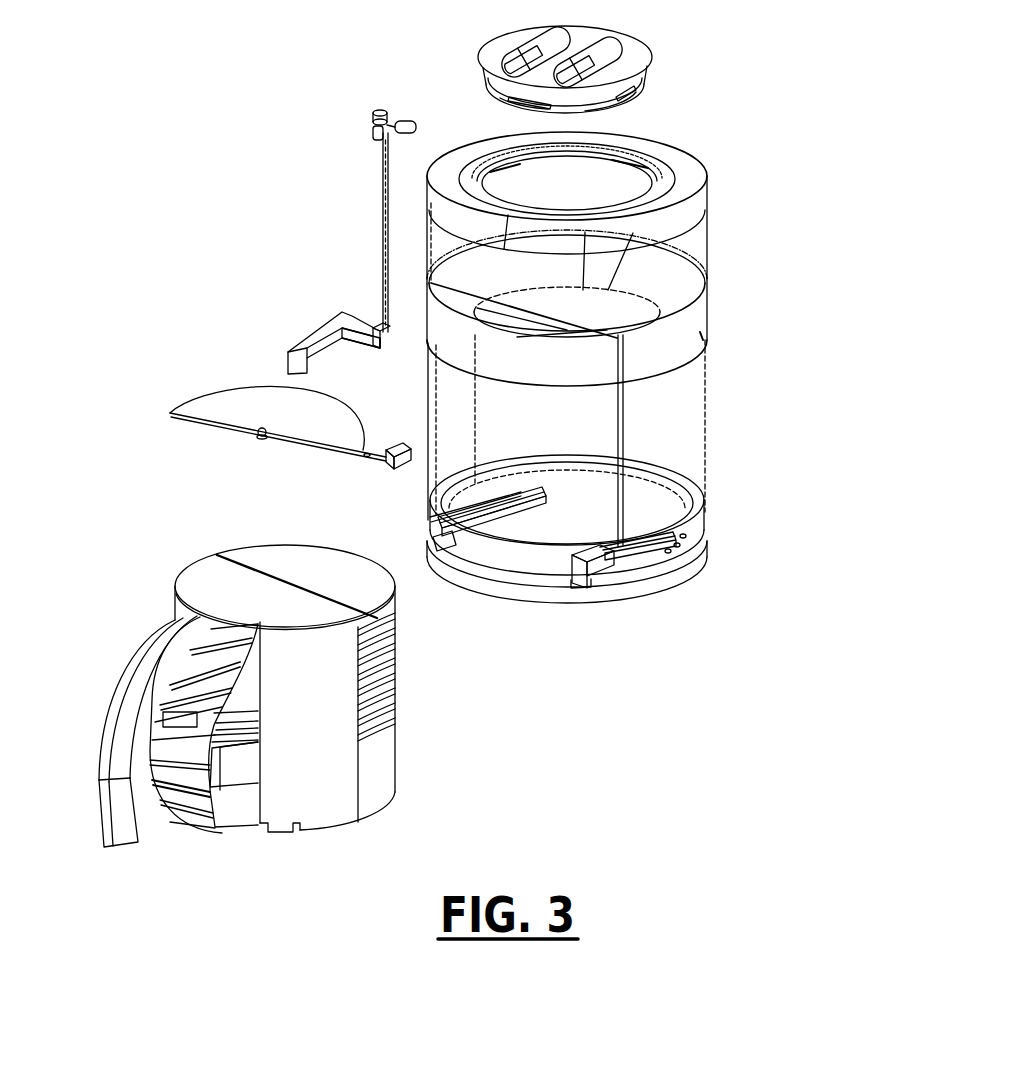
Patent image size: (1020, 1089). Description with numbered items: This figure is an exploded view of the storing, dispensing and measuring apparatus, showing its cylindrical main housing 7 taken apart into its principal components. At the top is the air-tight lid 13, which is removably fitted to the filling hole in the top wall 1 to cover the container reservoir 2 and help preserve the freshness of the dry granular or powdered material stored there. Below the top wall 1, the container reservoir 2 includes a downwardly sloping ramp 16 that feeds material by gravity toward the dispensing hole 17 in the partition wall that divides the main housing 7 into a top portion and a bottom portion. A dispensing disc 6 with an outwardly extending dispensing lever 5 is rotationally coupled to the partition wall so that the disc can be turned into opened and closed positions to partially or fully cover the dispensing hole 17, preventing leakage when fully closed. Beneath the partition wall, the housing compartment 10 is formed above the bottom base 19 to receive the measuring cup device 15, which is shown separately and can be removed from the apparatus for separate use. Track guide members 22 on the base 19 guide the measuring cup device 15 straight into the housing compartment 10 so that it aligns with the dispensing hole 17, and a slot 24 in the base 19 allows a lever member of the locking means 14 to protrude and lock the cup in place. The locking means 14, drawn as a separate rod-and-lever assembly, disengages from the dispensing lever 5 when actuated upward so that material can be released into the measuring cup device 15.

The top wall 1 is at (668, 192).
The container reservoir 2 is at (606, 155).
The dispensing lever 5 is at (388, 458).
The dispensing disc 6 is at (257, 400).
The main housing 7 is at (762, 362).
The housing compartment 10 is at (575, 431).
The air-tight lid 13 is at (503, 53).
The locking means 14 is at (343, 147).
The measuring cup device 15 is at (163, 541).
The downwardly sloping ramp 16 is at (643, 280).
The dispensing hole 17 is at (616, 310).
The bottom base 19 is at (692, 568).
The track guide members 22 is at (458, 543).
The slot 24 is at (602, 567).